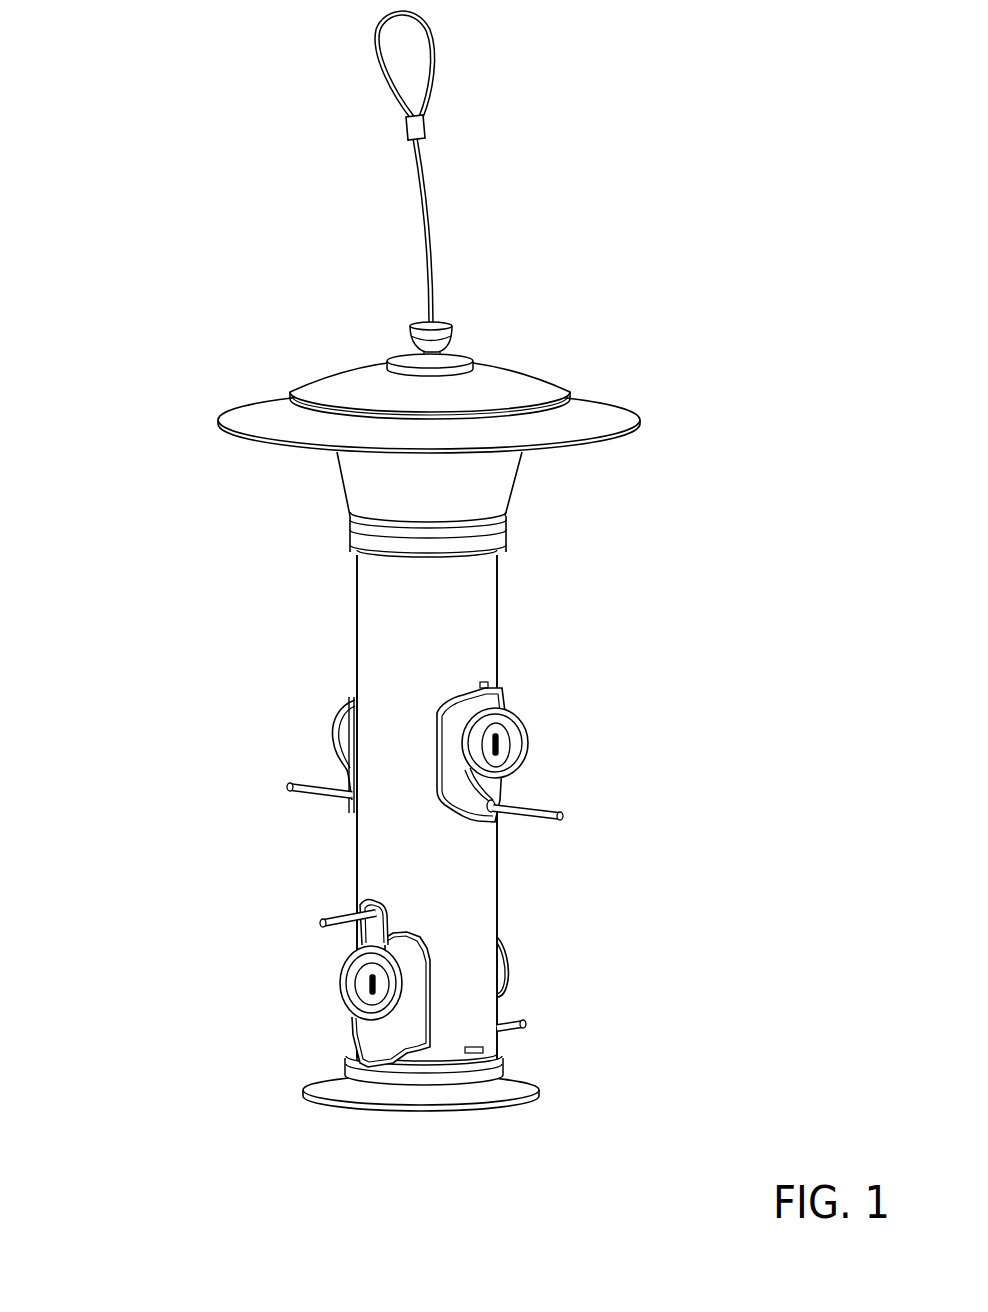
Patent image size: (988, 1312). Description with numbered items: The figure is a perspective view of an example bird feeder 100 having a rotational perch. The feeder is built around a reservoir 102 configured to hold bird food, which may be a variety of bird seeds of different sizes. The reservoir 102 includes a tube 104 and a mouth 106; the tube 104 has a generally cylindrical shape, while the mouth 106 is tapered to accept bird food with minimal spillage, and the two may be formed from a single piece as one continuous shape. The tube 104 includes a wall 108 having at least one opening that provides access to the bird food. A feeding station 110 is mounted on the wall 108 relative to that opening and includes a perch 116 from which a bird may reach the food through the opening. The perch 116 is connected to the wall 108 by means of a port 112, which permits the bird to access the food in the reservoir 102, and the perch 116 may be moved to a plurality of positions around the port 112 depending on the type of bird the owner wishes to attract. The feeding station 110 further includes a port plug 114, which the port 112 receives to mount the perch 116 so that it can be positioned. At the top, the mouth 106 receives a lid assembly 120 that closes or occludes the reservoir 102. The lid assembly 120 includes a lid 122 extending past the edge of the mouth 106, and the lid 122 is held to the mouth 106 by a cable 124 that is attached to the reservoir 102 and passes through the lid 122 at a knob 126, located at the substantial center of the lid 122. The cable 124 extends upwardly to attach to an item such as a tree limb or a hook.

The bird feeder 100 is at (133, 90).
The reservoir 102 is at (219, 556).
The tube 104 is at (522, 653).
The mouth 106 is at (529, 489).
The wall 108 is at (357, 627).
The feeding station 110 is at (329, 898).
The port 112 is at (345, 1030).
The port plug 114 is at (353, 980).
The perch 116 is at (345, 928).
The lid assembly 120 is at (546, 208).
The lid 122 is at (343, 370).
The cable 124 is at (423, 215).
The knob 126 is at (415, 326).